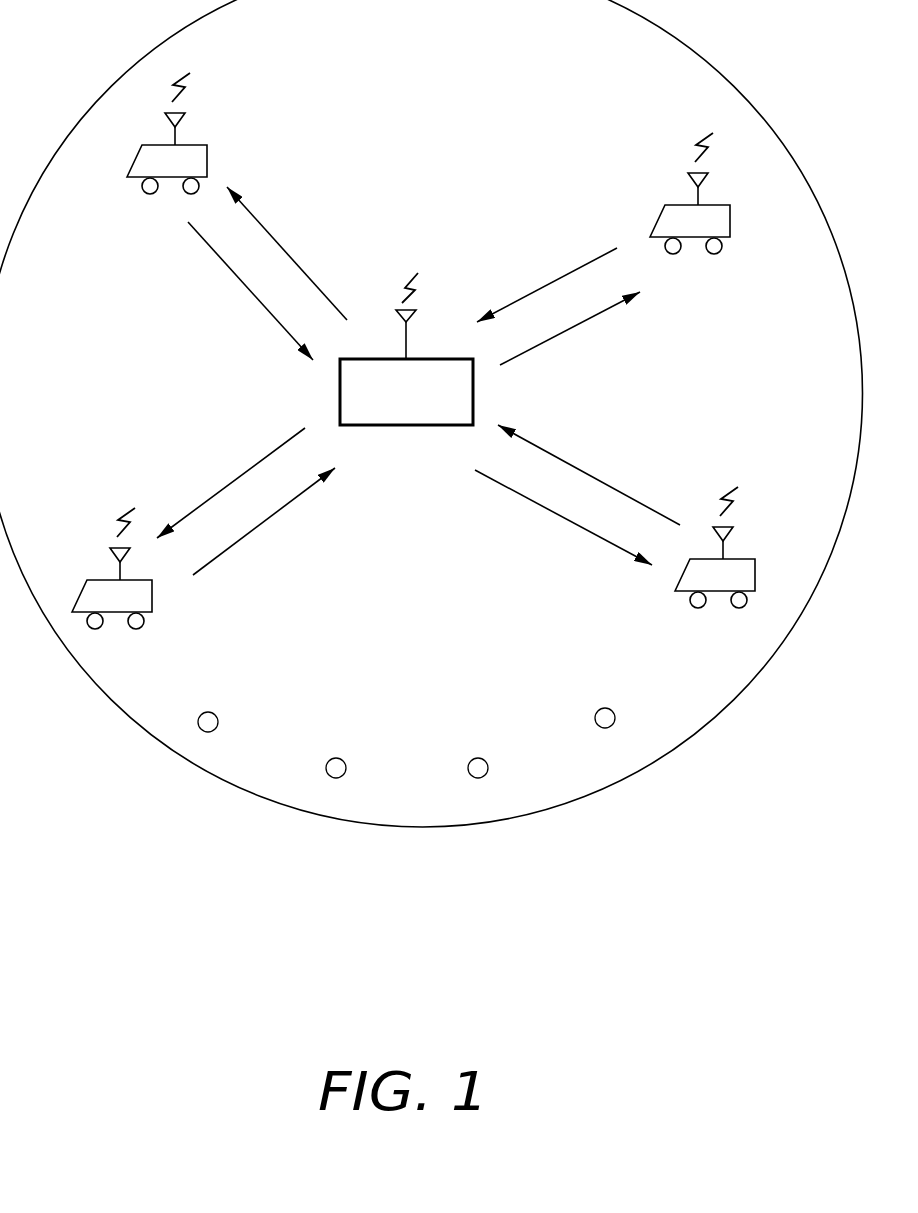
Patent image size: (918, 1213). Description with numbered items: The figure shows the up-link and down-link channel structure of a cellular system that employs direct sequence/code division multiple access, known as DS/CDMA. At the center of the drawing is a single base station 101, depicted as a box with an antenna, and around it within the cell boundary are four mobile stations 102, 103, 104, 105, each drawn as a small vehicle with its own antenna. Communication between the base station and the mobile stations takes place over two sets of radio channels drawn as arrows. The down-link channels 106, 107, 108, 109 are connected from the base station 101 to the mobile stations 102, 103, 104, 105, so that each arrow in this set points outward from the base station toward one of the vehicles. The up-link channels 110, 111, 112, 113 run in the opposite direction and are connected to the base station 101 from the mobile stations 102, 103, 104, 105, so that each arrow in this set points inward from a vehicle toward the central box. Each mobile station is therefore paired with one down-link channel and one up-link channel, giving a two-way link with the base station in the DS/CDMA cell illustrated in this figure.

The base station 101 is at (406, 425).
The mobile station 102 is at (207, 161).
The mobile station 103 is at (152, 597).
The mobile station 104 is at (786, 565).
The mobile station 105 is at (730, 218).
The down-link channel 106 is at (288, 253).
The down-link channel 107 is at (232, 482).
The down-link channel 108 is at (567, 522).
The down-link channel 109 is at (567, 328).
The up-link channel 110 is at (250, 292).
The up-link channel 111 is at (257, 527).
The up-link channel 112 is at (587, 475).
The up-link channel 113 is at (550, 282).